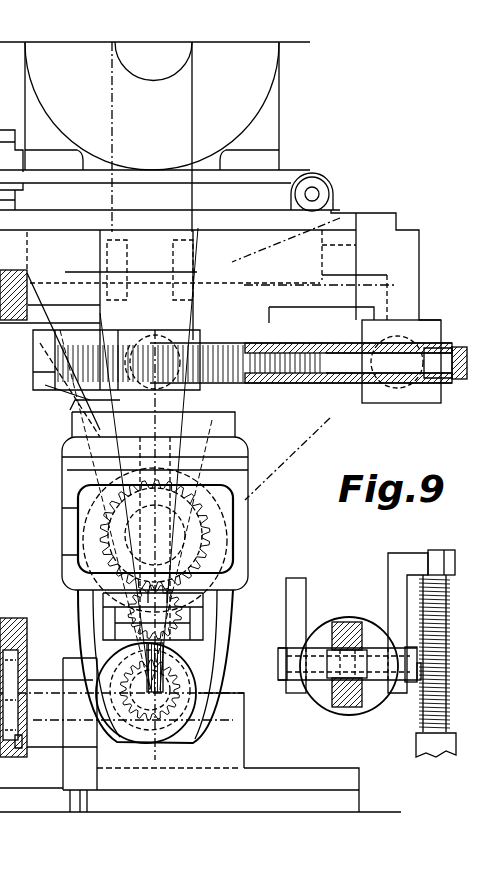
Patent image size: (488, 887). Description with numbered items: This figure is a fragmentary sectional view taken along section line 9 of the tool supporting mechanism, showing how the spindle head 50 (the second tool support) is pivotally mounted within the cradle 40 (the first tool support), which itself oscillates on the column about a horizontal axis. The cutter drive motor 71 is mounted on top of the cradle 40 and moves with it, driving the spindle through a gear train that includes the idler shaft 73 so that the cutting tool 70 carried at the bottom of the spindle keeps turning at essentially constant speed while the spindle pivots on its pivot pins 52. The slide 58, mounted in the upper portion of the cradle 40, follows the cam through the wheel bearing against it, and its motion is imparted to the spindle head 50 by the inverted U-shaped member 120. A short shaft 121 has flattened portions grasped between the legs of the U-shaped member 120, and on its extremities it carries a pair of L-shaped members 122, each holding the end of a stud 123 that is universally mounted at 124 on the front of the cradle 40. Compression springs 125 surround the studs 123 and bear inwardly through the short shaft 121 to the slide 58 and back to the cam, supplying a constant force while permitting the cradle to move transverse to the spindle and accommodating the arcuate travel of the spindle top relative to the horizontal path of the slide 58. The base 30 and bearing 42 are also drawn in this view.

The cutter drive motor 71 is at (261, 77).
The slide 58 is at (339, 203).
The cradle 40 is at (371, 378).
The spindle head 50 is at (252, 450).
The compression springs 125 is at (274, 360).
The inverted U-shaped member 120 is at (177, 321).
The L-shaped members 122 is at (180, 327).
The short shaft 121 is at (58, 437).
The section line 9 is at (271, 333).
The universal mounting 124 is at (398, 393).
The stud 123 is at (346, 362).
The idler shaft 73 is at (203, 620).
The cutting tool 70 is at (163, 670).
The pivot pins 52 is at (240, 705).
The base 30 is at (244, 768).
The bearing 42 is at (48, 671).